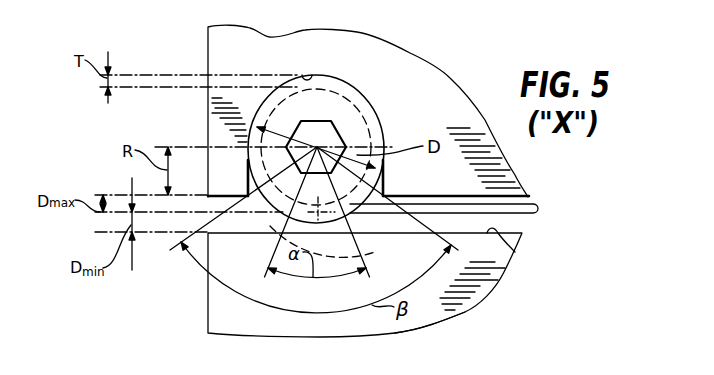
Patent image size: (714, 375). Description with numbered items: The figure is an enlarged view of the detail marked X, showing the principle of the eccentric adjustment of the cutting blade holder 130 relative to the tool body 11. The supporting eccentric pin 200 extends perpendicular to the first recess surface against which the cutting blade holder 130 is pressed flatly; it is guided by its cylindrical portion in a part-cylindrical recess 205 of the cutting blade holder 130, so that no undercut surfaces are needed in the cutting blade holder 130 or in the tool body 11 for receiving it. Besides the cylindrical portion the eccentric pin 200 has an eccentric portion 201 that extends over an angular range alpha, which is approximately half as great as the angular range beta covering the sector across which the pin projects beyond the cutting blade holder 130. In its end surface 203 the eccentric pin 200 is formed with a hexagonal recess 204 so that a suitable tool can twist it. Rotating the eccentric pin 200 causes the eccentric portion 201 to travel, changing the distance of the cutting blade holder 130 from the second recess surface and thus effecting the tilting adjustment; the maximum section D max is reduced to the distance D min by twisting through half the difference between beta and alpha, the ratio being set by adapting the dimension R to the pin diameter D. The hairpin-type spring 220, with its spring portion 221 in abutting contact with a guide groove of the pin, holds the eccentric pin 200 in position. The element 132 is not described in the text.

The tool body 11 is at (467, 304).
The cutting blade holder 130 is at (450, 75).
The lower jaw member 132 is at (515, 250).
The supporting eccentric pin 200 is at (357, 83).
The eccentric portion 201 is at (268, 228).
The end surface 203 is at (270, 96).
The hexagonal recess 204 is at (337, 133).
The part-cylindrical recess 205 is at (304, 73).
The hairpin-type spring 220 is at (535, 203).
The spring portion 221 is at (357, 251).